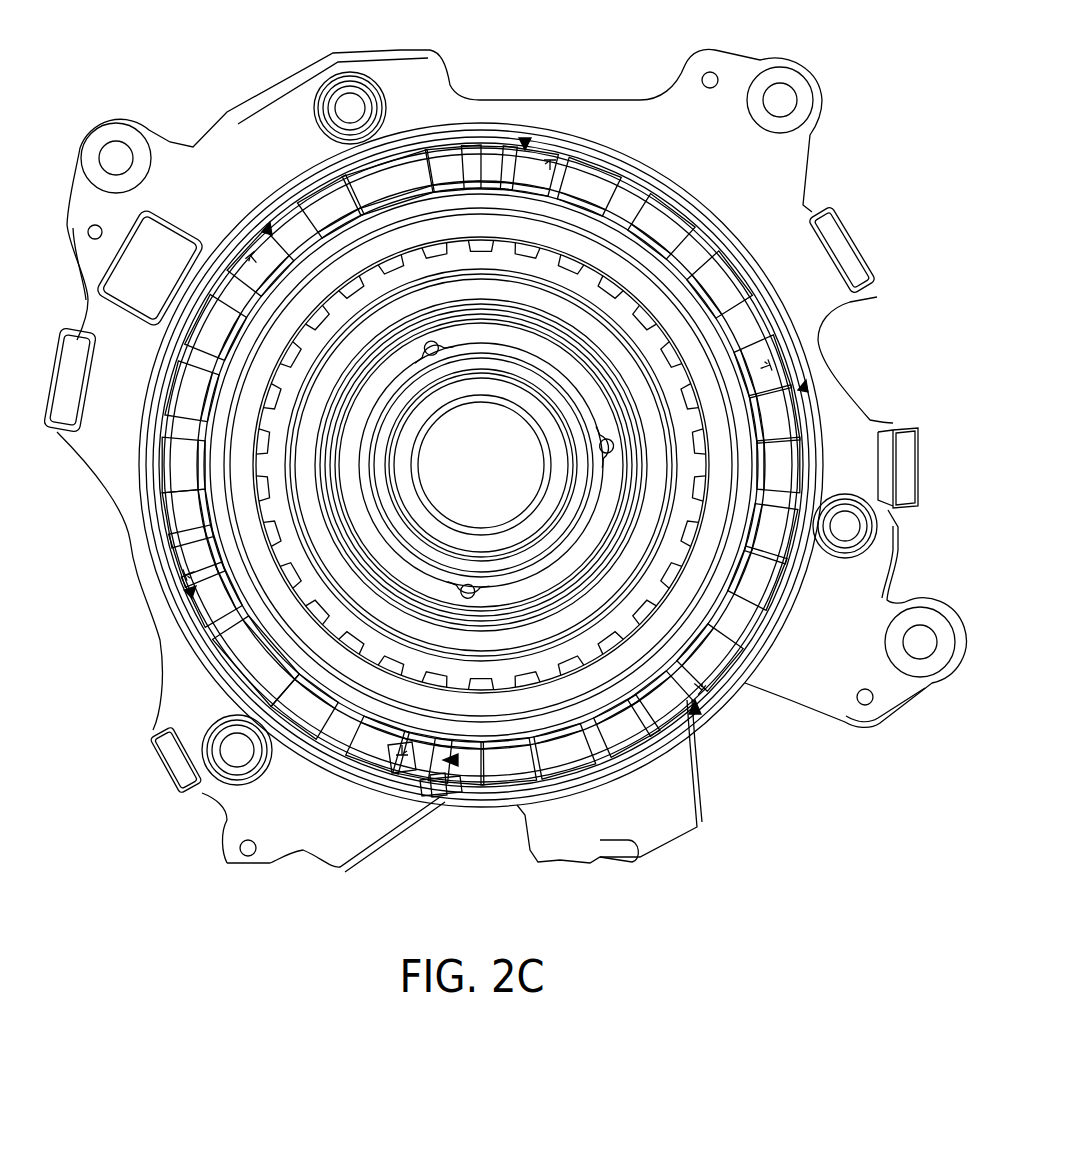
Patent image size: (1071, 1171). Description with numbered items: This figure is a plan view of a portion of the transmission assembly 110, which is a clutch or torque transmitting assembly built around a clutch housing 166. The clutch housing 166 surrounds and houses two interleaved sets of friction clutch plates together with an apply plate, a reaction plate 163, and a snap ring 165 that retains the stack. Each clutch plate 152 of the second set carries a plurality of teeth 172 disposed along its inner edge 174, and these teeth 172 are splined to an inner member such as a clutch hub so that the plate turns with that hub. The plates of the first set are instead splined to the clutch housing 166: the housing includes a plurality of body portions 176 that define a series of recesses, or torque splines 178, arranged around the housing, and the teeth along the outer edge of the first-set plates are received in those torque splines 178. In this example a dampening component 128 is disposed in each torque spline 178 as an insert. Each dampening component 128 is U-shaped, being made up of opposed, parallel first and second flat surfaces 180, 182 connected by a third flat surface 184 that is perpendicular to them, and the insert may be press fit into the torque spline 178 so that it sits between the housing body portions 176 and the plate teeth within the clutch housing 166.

The transmission assembly 110 is at (873, 153).
The dampening component 128 is at (250, 245).
The clutch plate 152 is at (790, 470).
The reaction plate 163 is at (747, 580).
The snap ring 165 is at (850, 414).
The clutch housing 166 is at (765, 698).
The teeth 172 is at (587, 258).
The inner edge 174 is at (497, 257).
The body portions 176 is at (262, 245).
The torque splines 178 is at (237, 290).
The first flat surface 180 is at (433, 770).
The second flat surface 182 is at (393, 747).
The third flat surface 184 is at (413, 783).